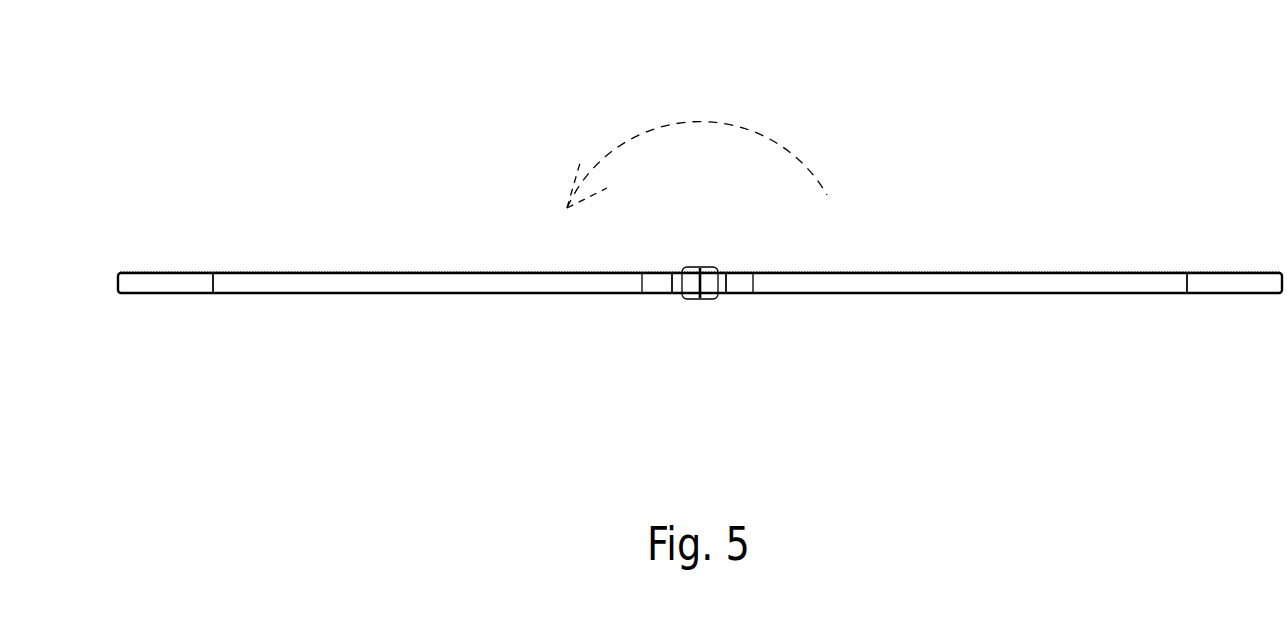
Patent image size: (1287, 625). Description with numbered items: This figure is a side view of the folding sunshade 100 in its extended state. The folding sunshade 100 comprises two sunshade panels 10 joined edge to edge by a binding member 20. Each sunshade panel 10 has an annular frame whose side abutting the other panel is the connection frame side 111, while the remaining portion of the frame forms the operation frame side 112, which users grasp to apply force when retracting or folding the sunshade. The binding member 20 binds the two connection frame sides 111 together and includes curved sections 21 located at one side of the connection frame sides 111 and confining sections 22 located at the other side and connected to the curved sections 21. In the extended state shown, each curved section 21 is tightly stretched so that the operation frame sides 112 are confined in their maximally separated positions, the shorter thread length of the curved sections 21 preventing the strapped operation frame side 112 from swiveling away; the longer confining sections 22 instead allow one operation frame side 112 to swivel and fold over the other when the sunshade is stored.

The folding sunshade 100 is at (908, 166).
The sunshade panel 10 is at (407, 272).
The operation frame side 112 is at (168, 281).
The connection frame side 111 is at (681, 297).
The binding member 20 is at (717, 353).
The curved section 21 is at (719, 298).
The confining section 22 is at (700, 300).